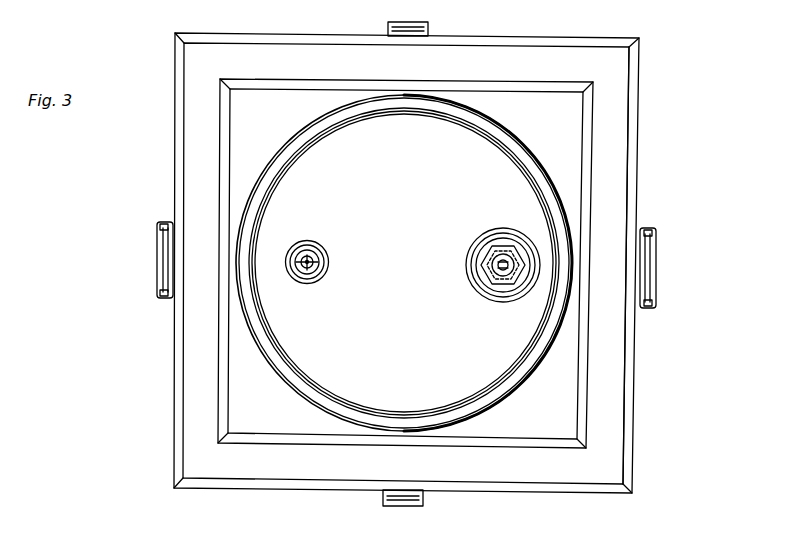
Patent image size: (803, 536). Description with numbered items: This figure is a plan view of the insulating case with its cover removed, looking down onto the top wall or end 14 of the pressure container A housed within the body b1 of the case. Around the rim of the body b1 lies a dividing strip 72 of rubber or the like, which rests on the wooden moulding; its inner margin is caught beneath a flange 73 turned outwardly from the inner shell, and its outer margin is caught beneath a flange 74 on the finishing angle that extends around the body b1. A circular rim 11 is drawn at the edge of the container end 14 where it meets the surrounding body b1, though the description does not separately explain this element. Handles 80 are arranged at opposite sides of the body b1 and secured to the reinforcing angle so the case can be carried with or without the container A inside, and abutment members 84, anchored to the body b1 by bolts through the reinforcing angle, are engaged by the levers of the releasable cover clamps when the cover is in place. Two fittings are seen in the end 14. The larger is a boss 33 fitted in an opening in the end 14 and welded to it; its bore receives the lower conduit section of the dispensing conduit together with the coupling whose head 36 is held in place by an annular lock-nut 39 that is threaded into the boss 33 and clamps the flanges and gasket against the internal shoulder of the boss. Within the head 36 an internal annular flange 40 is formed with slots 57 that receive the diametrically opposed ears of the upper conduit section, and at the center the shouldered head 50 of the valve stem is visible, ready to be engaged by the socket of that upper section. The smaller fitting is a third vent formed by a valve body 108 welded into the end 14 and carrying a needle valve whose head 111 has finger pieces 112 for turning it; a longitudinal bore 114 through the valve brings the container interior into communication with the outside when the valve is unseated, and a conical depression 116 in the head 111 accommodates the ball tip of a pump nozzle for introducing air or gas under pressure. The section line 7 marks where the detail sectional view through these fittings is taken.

The body b1 is at (640, 79).
The flange 74 is at (632, 122).
The dividing strip 72 is at (607, 183).
The flange 73 is at (587, 136).
The ring 11 is at (508, 141).
The end 14 is at (328, 152).
The container A is at (285, 390).
The abutment member 84 is at (429, 26).
The handles 80 is at (166, 300).
The valve body 108 is at (316, 250).
The finger pieces 112 is at (304, 256).
The conical depression 116 is at (320, 262).
The head 111 is at (306, 272).
The bore 114 is at (314, 272).
The line 7— 7 is at (405, 242).
The boss 33 is at (478, 258).
The lock-nut 39 is at (492, 246).
The shouldered head 50 is at (507, 256).
The internal annular flange 40 is at (511, 279).
The head 36 is at (503, 292).
The slots 57 is at (495, 270).